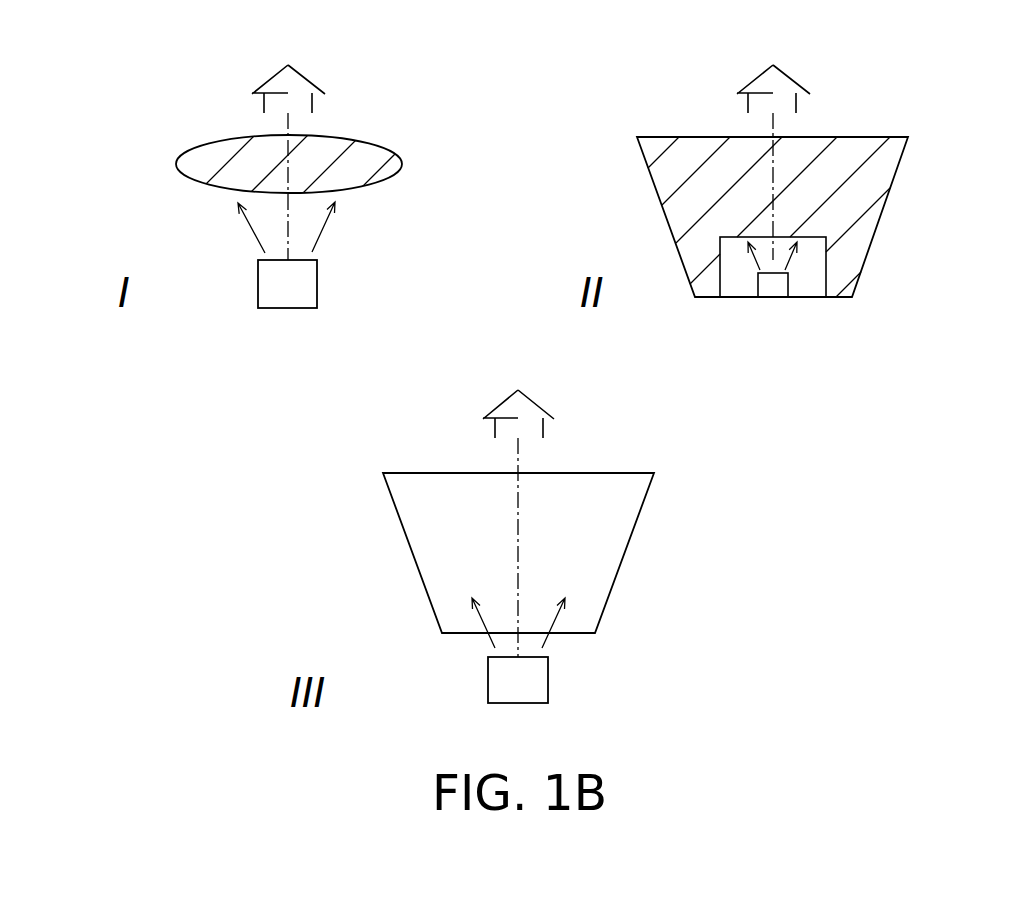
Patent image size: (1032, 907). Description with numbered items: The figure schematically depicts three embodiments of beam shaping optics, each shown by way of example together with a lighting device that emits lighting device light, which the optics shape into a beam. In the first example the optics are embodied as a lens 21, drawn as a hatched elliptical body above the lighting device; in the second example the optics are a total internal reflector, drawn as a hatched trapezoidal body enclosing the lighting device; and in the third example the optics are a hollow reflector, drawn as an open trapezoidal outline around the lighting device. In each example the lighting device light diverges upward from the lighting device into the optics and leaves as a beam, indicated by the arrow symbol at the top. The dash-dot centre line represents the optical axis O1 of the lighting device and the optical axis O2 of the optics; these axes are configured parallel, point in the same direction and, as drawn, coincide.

The lens 21 is at (175, 188).
The optical axis of the lighting device O1 is at (350, 123).
The optical axis of the optics O2 is at (289, 165).